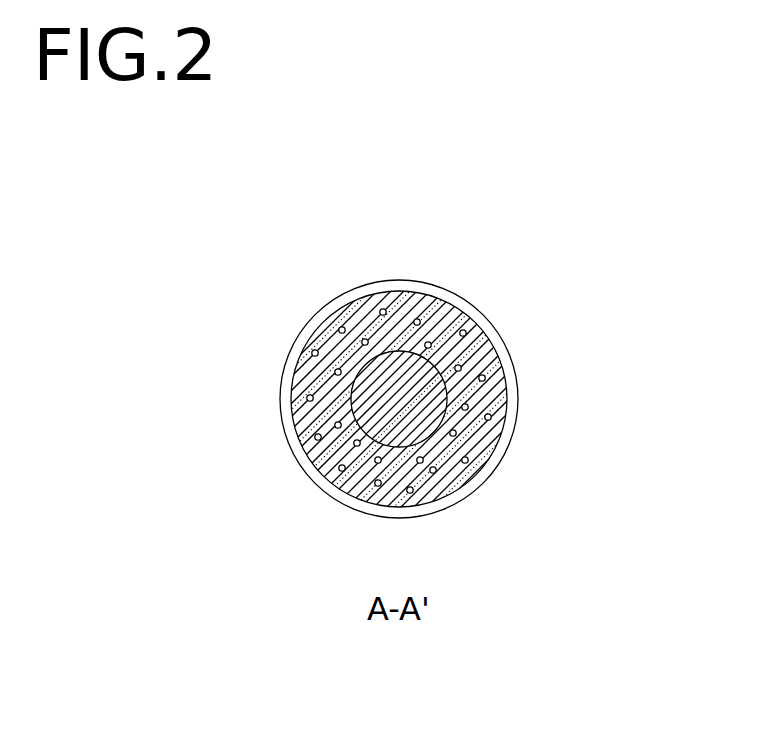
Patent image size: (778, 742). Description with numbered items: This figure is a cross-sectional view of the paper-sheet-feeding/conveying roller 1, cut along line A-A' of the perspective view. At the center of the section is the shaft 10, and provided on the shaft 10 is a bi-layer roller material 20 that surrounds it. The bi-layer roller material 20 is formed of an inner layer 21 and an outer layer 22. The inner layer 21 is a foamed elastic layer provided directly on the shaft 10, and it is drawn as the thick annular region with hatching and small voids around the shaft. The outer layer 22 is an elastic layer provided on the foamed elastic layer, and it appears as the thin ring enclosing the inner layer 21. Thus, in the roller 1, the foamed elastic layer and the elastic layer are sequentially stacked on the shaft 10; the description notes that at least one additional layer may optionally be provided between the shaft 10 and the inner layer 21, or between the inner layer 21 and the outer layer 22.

The paper-sheet-feeding/conveying roller 1 is at (517, 268).
The shaft 10 is at (432, 367).
The bi-layer roller material 20 is at (625, 405).
The inner layer 21 is at (488, 405).
The outer layer 22 is at (490, 454).